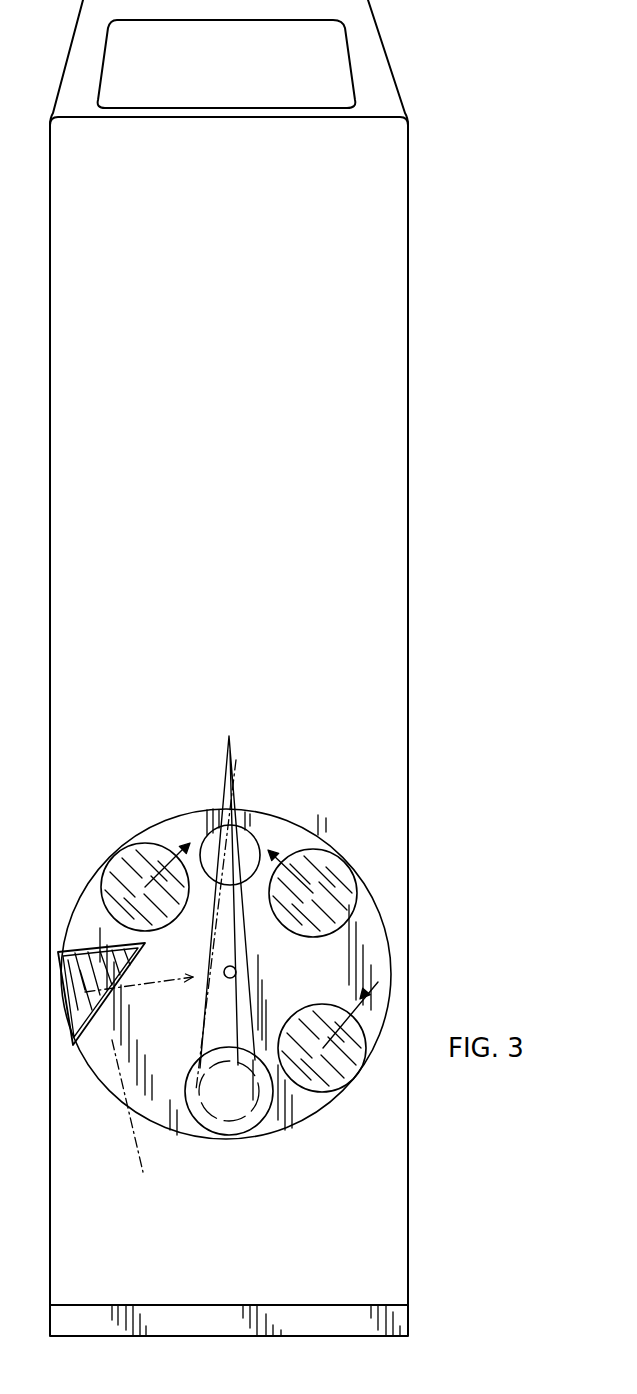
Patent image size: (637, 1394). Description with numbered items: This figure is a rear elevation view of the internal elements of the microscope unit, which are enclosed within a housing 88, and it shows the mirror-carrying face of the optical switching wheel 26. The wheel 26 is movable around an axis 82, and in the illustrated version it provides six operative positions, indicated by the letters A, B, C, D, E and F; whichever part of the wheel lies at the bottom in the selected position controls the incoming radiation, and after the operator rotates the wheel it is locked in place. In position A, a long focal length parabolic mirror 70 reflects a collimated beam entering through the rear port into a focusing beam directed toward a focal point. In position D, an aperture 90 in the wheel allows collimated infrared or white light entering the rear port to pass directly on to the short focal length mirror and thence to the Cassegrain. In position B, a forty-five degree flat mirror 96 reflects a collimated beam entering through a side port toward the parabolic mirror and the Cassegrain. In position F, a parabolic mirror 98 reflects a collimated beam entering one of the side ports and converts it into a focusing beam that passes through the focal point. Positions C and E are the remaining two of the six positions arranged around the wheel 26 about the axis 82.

The housing 88 is at (411, 580).
The mirror-carrying wheel 26 is at (387, 921).
The aperture 90 is at (247, 845).
The axis 82 is at (238, 972).
The 45° flat mirror 96 is at (353, 1047).
The long focal length parabolic mirror 70 is at (222, 1103).
The parabolic mirror 98 is at (90, 1012).
The position A is at (229, 1138).
The position B is at (351, 1088).
The position C is at (350, 857).
The position D is at (247, 830).
The position E is at (114, 854).
The position F is at (62, 997).